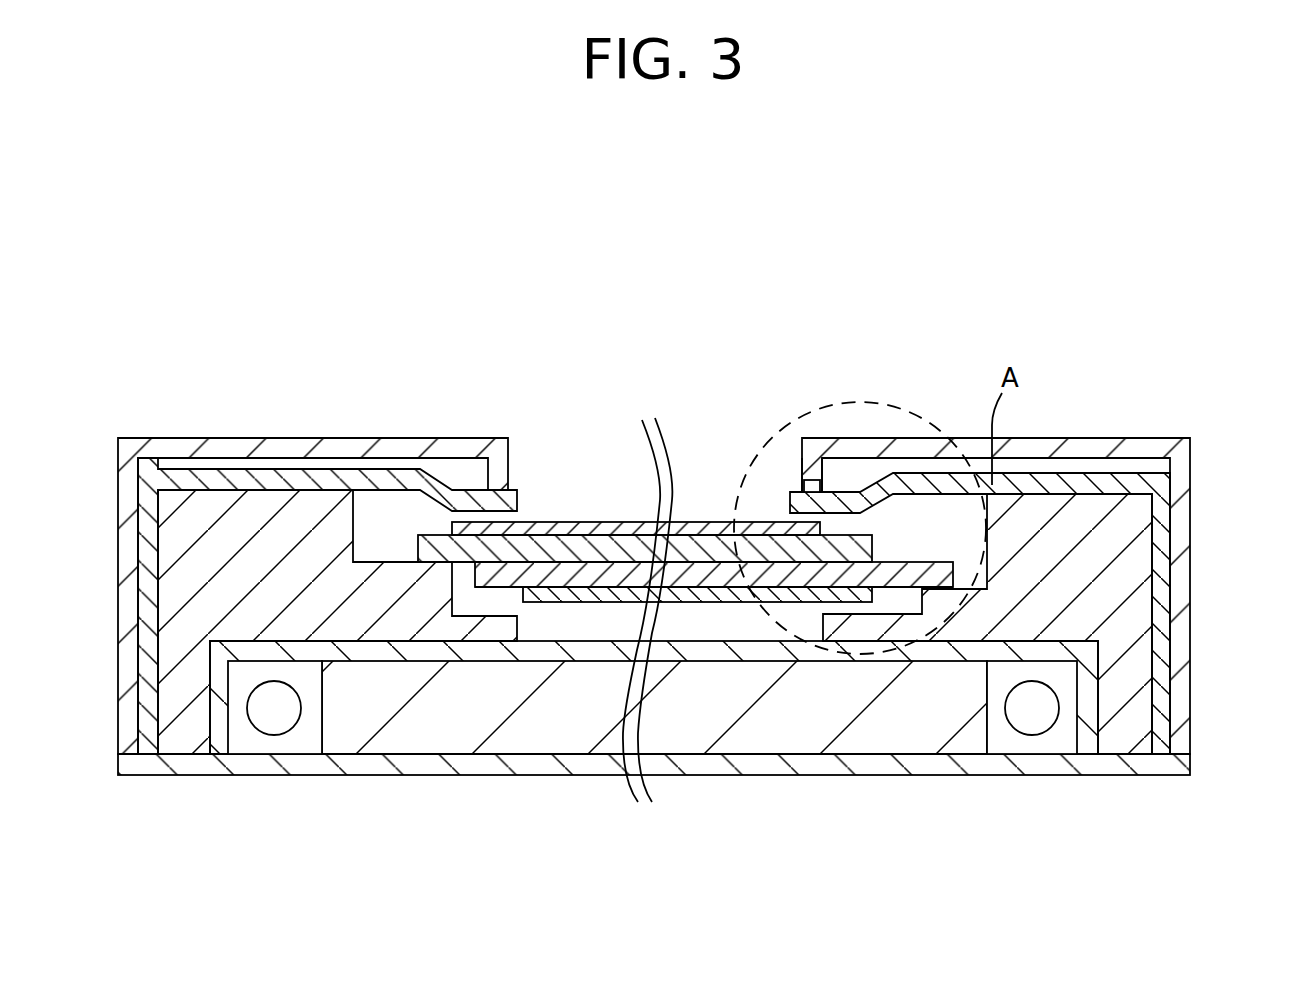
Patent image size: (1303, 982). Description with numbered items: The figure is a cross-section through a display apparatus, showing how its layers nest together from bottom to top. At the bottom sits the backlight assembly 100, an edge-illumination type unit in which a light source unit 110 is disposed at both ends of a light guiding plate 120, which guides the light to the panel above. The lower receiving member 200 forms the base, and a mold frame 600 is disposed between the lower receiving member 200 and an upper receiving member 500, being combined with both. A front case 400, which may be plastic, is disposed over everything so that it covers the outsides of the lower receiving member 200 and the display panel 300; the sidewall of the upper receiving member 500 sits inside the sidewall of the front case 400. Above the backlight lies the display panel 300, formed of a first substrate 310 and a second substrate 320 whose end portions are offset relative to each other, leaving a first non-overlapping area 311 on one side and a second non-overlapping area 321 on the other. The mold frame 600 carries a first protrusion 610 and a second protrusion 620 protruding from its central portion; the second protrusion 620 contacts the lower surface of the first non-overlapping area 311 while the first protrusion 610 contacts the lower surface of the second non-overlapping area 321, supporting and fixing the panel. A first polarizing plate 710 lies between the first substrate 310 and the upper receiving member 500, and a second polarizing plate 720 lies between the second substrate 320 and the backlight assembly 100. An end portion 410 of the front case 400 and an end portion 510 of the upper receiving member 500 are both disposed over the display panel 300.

The backlight assembly 100 is at (654, 768).
The light source unit 110 is at (903, 852).
The light guiding plate 120 is at (928, 745).
The lower receiving member 200 is at (718, 775).
The display panel 300 is at (650, 492).
The first substrate 310 is at (538, 540).
The first non-overlapping area 311 is at (452, 564).
The second substrate 320 is at (598, 565).
The second non-overlapping area 321 is at (918, 600).
The front case 400 is at (1180, 537).
The end portion of the front case 410 is at (824, 471).
The upper receiving member 500 is at (1160, 605).
The end portion of the upper receiving member 510 is at (806, 490).
The mold frame 600 is at (723, 670).
The first protrusion 610 is at (895, 641).
The second protrusion 620 is at (418, 617).
The first polarizing plate 710 is at (768, 595).
The second polarizing plate 720 is at (708, 525).